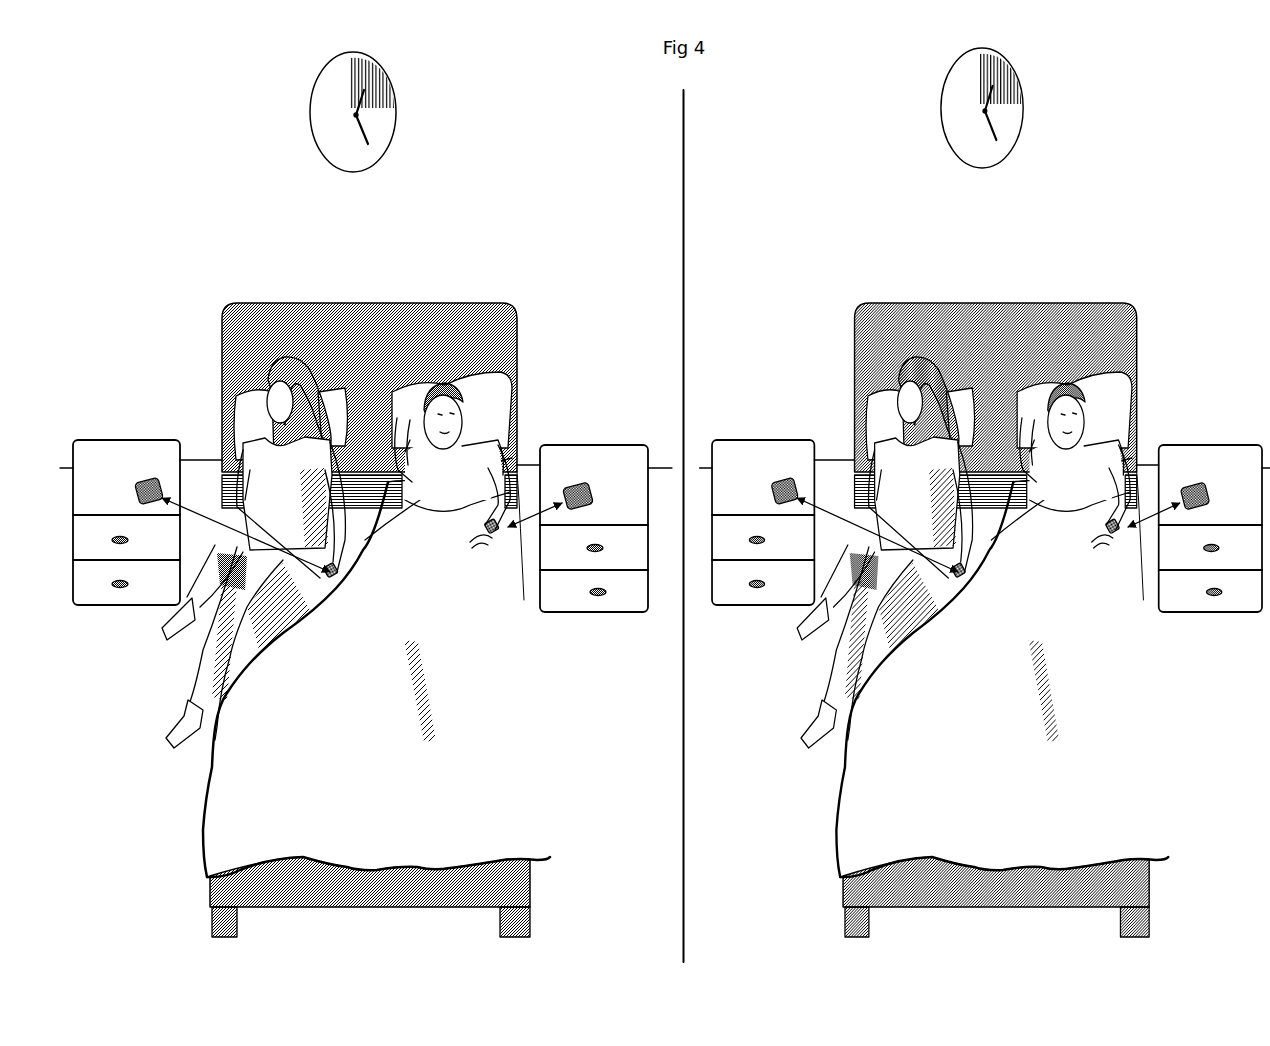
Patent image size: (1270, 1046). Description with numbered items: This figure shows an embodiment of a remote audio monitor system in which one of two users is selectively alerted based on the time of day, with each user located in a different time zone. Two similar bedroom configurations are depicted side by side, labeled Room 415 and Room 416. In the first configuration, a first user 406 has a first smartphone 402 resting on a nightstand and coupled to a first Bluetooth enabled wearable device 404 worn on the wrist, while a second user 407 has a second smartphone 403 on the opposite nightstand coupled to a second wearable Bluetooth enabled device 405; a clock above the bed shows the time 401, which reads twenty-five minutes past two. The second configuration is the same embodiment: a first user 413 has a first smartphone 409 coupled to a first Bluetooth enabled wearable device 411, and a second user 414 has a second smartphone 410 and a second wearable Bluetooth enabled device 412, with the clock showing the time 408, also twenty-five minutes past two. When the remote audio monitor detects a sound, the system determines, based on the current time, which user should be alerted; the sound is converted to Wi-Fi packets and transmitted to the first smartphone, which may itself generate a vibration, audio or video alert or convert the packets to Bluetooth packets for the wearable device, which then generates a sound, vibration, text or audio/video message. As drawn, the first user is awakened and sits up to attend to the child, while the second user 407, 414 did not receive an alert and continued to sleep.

The time of 2:25 401 is at (316, 80).
The first smartphone 402 is at (153, 480).
The second smartphone 403 is at (585, 486).
The first Bluetooth enabled wearable device 404 is at (338, 585).
The second wearable Bluetooth enabled device 405 is at (498, 531).
The first user 406 is at (258, 458).
The second user 407 is at (502, 445).
The time of 2:25 408 is at (958, 108).
The first smartphone 409 is at (862, 490).
The second smartphone 410 is at (1184, 444).
The first Bluetooth enabled wearable device 411 is at (980, 607).
The second wearable Bluetooth enabled device 412 is at (1114, 564).
The first user 413 is at (884, 535).
The second user 414 is at (1103, 418).
The room 415 is at (366, 568).
The room 416 is at (985, 565).